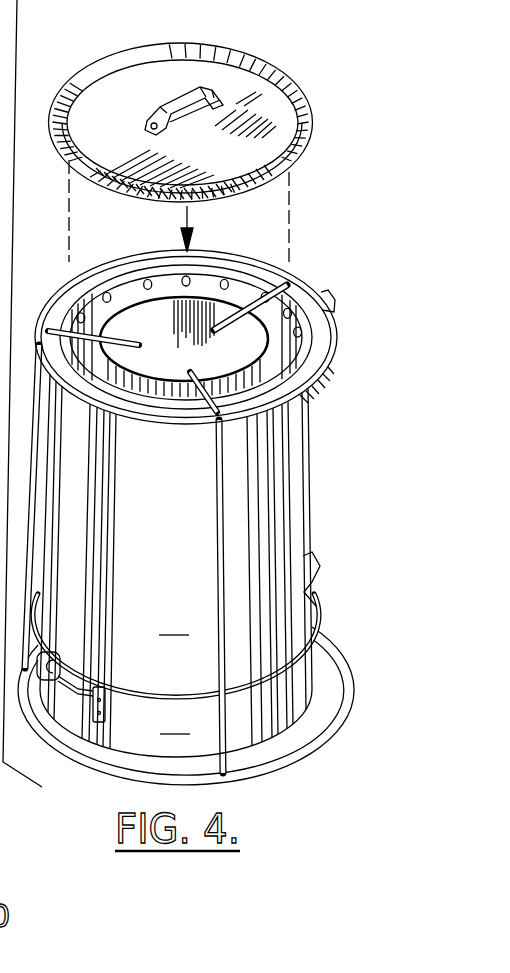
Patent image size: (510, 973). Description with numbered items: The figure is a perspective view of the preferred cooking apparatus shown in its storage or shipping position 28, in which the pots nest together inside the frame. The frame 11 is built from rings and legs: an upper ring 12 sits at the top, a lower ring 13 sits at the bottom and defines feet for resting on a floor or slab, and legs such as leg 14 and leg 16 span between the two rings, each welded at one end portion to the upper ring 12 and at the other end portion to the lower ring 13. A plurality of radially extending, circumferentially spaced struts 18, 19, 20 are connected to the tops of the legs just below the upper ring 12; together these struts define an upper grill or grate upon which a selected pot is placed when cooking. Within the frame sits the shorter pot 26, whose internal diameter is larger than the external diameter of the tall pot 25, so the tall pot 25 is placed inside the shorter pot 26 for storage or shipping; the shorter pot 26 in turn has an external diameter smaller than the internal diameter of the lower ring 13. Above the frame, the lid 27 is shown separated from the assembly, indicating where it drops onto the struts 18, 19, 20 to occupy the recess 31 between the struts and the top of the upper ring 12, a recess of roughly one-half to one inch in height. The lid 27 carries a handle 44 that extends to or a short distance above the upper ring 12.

The frame 11 is at (176, 566).
The upper ring 12 is at (333, 331).
The lower ring 13 is at (306, 748).
The leg 14 is at (36, 512).
The leg 16 is at (218, 508).
The strut 18 is at (143, 343).
The strut 19 is at (280, 282).
The strut 20 is at (188, 392).
The tall pot 25 is at (174, 621).
The short pot 26 is at (175, 720).
The lid 27 is at (190, 106).
The storage or shipping position 28 is at (198, 439).
The recess 31 is at (197, 340).
The handle 44 is at (178, 100).